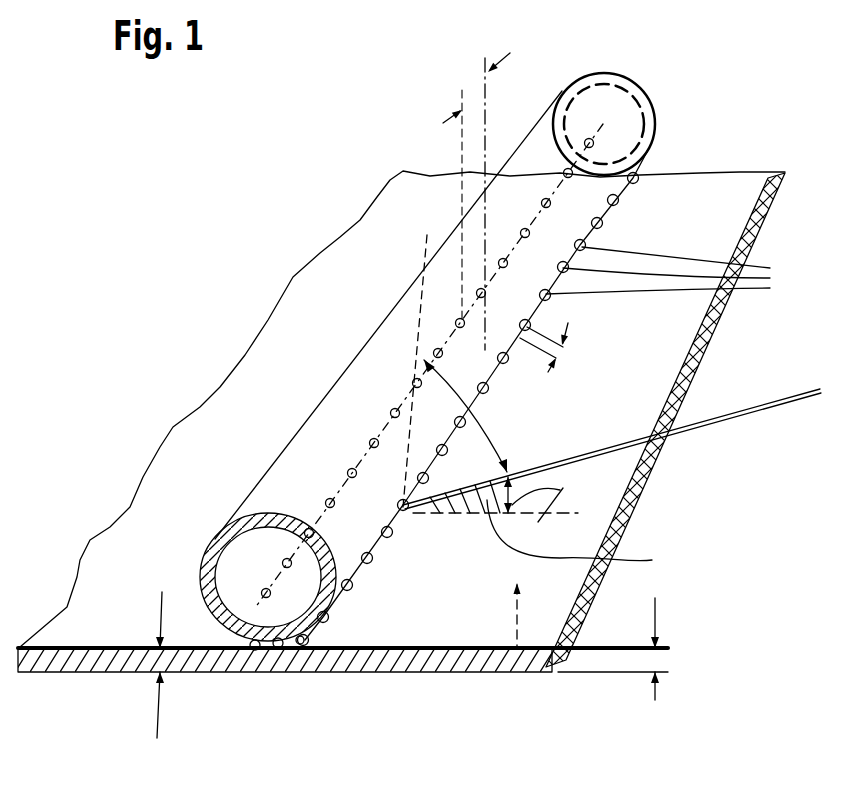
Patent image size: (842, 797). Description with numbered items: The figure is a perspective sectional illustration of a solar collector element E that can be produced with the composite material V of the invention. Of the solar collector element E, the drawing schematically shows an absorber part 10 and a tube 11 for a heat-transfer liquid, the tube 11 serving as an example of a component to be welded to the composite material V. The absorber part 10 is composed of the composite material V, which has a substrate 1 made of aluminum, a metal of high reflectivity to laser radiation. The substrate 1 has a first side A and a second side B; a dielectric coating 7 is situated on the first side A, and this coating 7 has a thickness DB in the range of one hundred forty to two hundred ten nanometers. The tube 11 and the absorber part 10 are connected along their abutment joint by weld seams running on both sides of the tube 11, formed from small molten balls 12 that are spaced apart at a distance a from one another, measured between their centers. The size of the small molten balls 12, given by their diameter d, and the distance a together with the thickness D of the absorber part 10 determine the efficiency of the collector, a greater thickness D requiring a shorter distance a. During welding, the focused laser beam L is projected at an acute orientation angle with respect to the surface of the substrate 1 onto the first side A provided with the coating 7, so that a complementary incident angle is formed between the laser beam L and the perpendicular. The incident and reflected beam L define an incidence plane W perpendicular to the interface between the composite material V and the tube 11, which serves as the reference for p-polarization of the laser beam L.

The substrate 1 is at (634, 500).
The dielectric coating 7 is at (84, 648).
The absorber part 10 is at (433, 608).
The tube 11 is at (370, 358).
The small molten balls 12 is at (676, 277).
The distance a is at (472, 85).
The first side A is at (698, 193).
The second side B is at (500, 673).
The thickness D is at (657, 657).
The thickness of the coating DB is at (162, 713).
The solar collector element E is at (118, 685).
The laser beam L is at (747, 413).
The composite material V is at (428, 658).
The incidence plane W is at (590, 539).
The diameter d is at (560, 350).